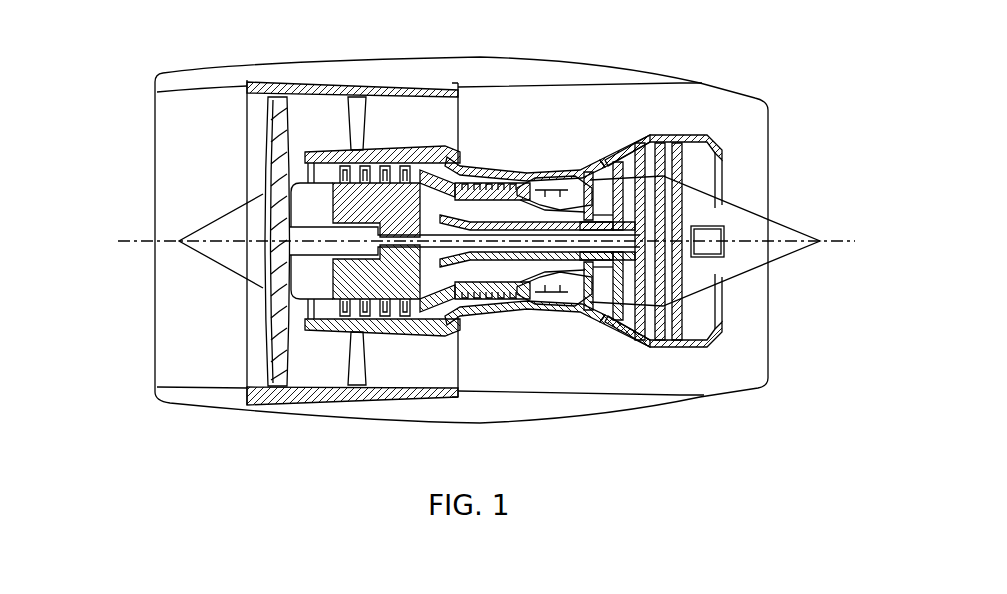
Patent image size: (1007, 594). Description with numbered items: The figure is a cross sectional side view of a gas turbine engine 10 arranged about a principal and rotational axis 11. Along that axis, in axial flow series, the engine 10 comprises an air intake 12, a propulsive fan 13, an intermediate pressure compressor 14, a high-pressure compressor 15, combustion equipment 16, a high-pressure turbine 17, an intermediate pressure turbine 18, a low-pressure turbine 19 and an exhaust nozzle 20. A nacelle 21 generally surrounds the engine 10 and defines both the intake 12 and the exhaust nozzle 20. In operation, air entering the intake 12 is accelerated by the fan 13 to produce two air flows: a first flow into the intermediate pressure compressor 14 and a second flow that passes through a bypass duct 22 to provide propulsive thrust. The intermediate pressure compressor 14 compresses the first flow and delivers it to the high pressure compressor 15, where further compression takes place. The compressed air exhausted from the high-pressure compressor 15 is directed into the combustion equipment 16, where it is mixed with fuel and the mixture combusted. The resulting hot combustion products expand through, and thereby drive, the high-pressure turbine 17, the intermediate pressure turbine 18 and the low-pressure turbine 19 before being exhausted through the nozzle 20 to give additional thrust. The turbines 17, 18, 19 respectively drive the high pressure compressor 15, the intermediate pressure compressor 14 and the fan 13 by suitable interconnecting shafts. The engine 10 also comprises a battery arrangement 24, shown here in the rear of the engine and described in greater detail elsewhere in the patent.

The gas turbine engine 10 is at (128, 128).
The principal and rotational axis 11 is at (165, 241).
The air intake 12 is at (208, 91).
The propulsive fan 13 is at (263, 337).
The intermediate pressure compressor 14 is at (407, 335).
The high-pressure compressor 15 is at (485, 182).
The combustion equipment 16 is at (537, 305).
The high-pressure turbine 17 is at (587, 310).
The intermediate pressure turbine 18 is at (627, 152).
The low-pressure turbine 19 is at (633, 340).
The exhaust nozzle 20 is at (767, 388).
The nacelle 21 is at (600, 62).
The bypass duct 22 is at (430, 133).
The battery arrangement 24 is at (708, 224).